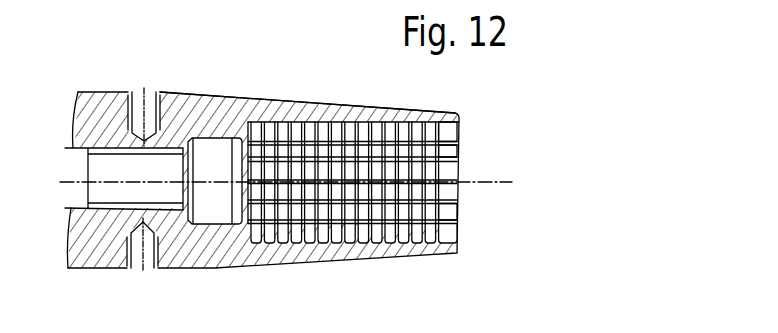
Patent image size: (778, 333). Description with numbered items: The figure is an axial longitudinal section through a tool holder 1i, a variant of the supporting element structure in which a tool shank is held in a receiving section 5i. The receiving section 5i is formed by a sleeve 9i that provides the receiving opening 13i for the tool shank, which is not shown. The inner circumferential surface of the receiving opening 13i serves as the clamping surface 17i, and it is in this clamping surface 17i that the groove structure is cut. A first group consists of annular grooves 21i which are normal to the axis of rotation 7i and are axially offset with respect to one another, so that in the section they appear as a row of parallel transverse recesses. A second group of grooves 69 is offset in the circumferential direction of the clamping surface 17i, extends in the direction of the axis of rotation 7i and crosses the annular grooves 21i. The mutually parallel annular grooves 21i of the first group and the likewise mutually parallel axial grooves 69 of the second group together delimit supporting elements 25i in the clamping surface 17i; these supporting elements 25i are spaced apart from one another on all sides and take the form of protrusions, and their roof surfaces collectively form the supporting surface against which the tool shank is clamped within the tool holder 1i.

The tool holder 1i is at (249, 142).
The receiving section 5i is at (347, 90).
The sleeve 9i is at (293, 102).
The grooves 69 is at (450, 130).
The axis of rotation 7i is at (485, 183).
The receiving opening 13i is at (442, 212).
The clamping surface 17i is at (386, 213).
The annular grooves 21i is at (348, 234).
The supporting elements 25i is at (307, 196).